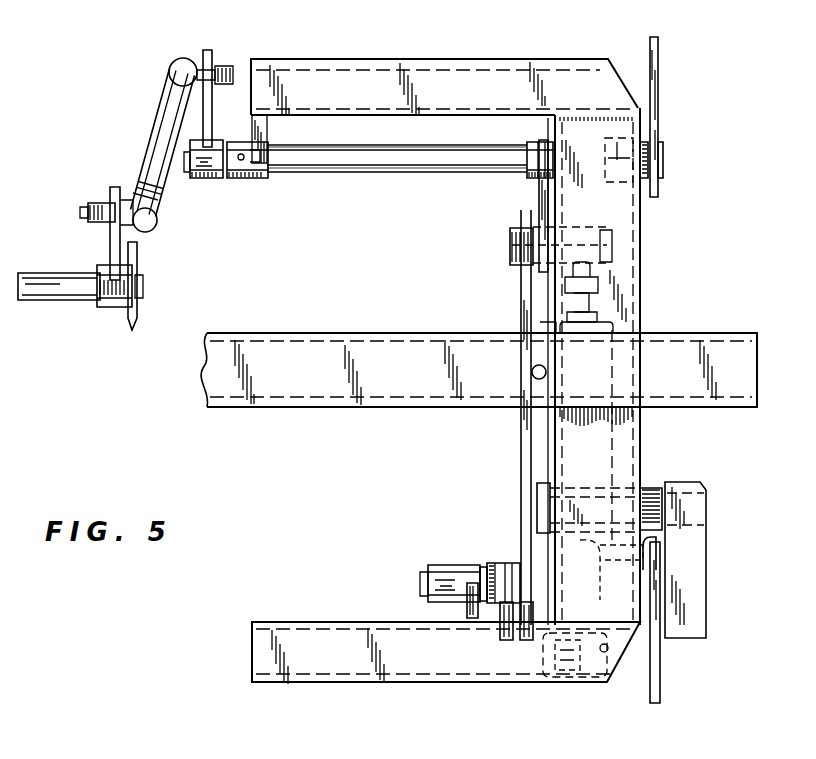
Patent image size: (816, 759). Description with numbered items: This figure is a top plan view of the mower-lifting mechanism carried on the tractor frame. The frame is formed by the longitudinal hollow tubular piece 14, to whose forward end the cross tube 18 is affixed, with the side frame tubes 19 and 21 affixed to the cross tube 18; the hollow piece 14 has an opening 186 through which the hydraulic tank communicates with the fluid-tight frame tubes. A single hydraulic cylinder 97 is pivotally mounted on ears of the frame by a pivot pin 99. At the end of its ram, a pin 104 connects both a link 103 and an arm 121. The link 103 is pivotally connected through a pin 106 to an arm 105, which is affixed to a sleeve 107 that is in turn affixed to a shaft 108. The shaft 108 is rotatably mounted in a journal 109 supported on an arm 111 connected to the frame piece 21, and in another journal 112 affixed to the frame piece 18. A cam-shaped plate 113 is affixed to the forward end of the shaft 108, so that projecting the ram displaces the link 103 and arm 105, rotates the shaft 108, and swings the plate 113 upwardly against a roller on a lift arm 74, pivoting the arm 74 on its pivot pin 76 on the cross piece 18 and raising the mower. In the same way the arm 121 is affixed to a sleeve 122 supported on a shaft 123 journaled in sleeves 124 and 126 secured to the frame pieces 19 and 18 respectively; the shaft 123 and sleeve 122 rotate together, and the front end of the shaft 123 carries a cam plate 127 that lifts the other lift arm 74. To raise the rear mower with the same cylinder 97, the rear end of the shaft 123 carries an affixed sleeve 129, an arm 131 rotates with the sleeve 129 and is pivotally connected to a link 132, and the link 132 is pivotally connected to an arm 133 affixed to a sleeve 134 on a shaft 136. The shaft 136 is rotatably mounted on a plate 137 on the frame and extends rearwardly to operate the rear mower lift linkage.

The longitudinally disposed hollow tubular piece 14 is at (291, 408).
The cross tube 18 is at (640, 280).
The side frame tube 19 is at (350, 58).
The side frame tube 21 is at (323, 682).
The lift arm 74 is at (692, 616).
The pivot pin 76 is at (708, 490).
The hydraulic cylinder 97 is at (607, 460).
The pivot pin 99 is at (578, 683).
The link 103 is at (521, 442).
The pin 104 is at (514, 254).
The arm 105 is at (523, 640).
The pin 106 is at (500, 620).
The sleeve 107 is at (506, 549).
The shaft 108 is at (481, 567).
The journal 109 is at (440, 565).
The arm 111 is at (467, 608).
The journal 112 is at (661, 541).
The plate 113 is at (661, 664).
The arm 121 is at (544, 198).
The sleeve 122 is at (527, 178).
The shaft 123 is at (355, 172).
The sleeve 124 is at (258, 179).
The sleeve 126 is at (603, 183).
The cam plate 127 is at (659, 117).
The sleeve 129 is at (195, 179).
The arm 131 is at (207, 97).
The link 132 is at (163, 117).
The arm 133 is at (108, 226).
The sleeve 134 is at (105, 308).
The shaft 136 is at (40, 273).
The plate 137 is at (138, 254).
The opening 186 is at (532, 374).